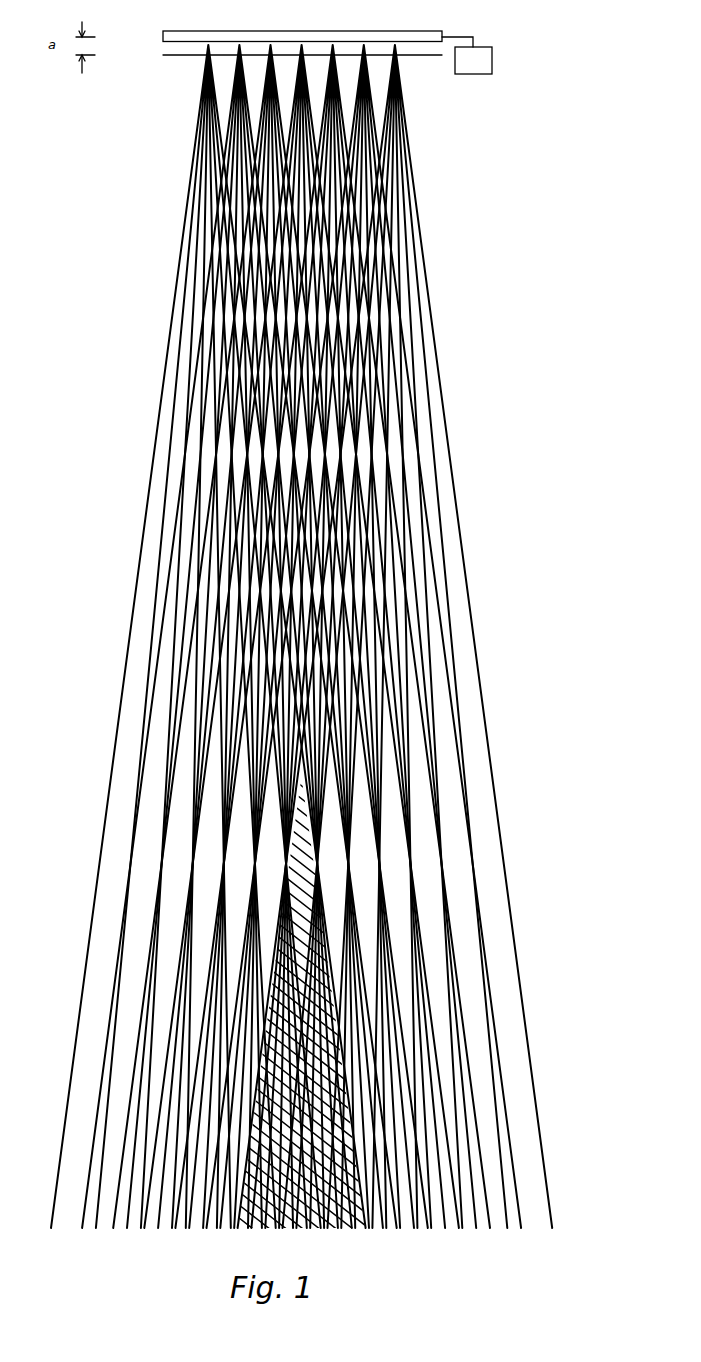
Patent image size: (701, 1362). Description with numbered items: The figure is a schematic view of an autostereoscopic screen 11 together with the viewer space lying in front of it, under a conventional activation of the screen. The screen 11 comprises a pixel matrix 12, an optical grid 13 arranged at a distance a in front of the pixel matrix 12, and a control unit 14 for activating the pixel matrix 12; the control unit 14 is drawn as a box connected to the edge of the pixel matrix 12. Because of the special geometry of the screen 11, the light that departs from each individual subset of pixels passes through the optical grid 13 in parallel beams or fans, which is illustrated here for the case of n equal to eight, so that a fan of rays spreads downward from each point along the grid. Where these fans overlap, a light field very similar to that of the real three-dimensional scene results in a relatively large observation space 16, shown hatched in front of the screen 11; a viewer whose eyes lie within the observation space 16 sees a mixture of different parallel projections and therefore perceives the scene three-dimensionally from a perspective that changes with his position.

The autostereoscopic screen 11 is at (344, 72).
The pixel matrix 12 is at (163, 33).
The optical grid 13 is at (172, 57).
The control unit 14 is at (473, 74).
The observation space 16 is at (330, 915).